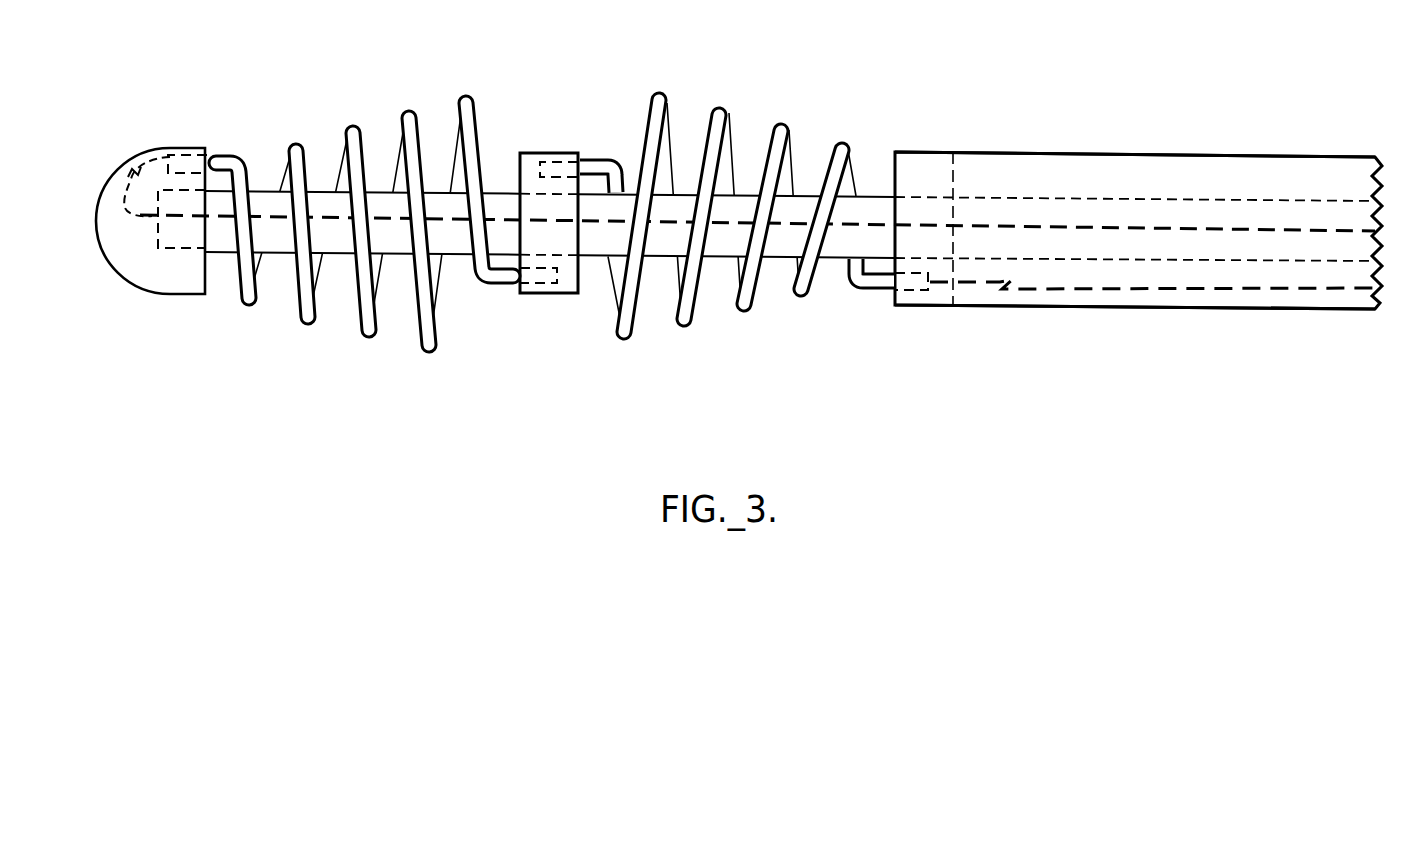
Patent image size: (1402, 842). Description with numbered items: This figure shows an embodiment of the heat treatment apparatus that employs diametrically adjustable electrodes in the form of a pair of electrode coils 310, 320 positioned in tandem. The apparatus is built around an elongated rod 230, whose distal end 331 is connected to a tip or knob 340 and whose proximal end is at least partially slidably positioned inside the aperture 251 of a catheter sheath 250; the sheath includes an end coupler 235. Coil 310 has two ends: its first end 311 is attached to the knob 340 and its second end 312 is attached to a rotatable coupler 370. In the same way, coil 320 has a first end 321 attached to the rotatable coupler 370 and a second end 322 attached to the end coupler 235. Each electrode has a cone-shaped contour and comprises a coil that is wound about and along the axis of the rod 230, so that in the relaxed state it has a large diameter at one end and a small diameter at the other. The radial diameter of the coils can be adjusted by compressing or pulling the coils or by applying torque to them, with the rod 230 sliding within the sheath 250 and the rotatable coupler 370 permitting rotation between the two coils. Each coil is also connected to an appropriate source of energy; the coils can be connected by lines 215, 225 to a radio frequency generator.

The tip or knob 340 is at (108, 262).
The distal end 331 is at (170, 250).
The first end 311 is at (187, 155).
The electrode coil 310 is at (373, 334).
The rotatable coupler 370 is at (530, 155).
The second end 312 is at (553, 285).
The first end 321 is at (553, 153).
The electrode coil 320 is at (722, 107).
The second end 322 is at (918, 290).
The elongated rod 230 is at (1043, 200).
The end coupler 235 is at (925, 163).
The catheter sheath 250 is at (1120, 153).
The aperture 251 is at (1075, 297).
The line 225 is at (1207, 232).
The line 215 is at (1203, 285).